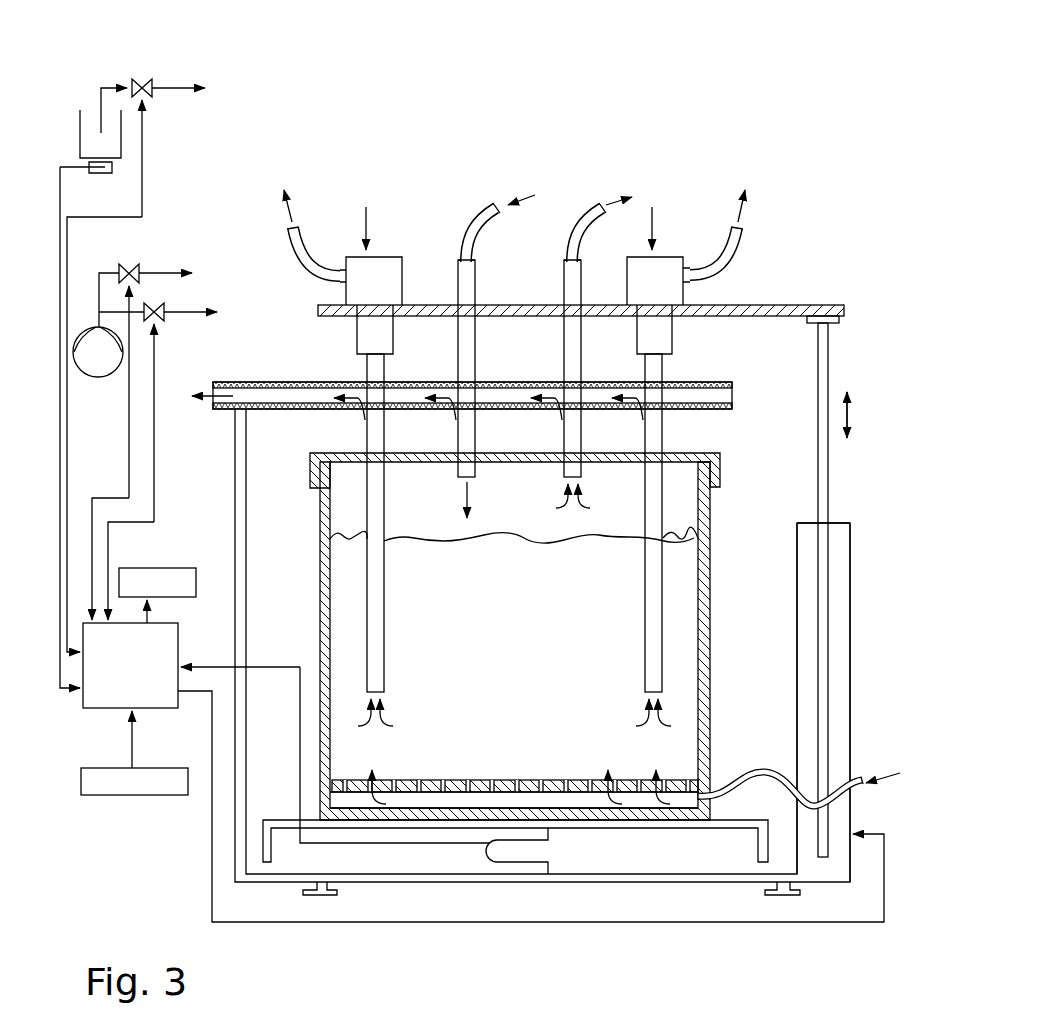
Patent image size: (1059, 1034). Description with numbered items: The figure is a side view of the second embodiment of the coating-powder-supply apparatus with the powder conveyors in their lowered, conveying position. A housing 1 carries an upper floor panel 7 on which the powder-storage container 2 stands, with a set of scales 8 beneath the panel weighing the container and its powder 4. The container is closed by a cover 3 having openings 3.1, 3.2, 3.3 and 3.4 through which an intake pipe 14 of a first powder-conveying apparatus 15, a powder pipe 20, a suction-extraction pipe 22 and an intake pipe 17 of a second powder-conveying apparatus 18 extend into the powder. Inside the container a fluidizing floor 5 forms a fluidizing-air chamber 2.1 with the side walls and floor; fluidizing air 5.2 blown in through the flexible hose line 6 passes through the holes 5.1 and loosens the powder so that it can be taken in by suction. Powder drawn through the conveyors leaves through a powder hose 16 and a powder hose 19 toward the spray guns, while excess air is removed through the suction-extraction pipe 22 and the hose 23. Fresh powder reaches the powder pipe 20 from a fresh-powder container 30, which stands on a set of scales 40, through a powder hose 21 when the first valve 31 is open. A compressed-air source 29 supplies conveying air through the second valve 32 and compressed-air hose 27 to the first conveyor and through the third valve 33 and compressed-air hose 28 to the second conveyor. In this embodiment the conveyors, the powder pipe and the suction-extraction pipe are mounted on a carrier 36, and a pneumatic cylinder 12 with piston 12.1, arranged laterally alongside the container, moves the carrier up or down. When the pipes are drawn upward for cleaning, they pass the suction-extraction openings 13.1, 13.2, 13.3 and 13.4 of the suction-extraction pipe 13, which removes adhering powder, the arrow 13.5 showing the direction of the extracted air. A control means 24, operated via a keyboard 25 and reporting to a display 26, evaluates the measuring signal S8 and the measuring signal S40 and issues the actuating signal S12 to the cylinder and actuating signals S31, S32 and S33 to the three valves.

The housing 1 is at (235, 508).
The powder-storage container 2 is at (320, 605).
The fluidizing-air chamber 2.1 is at (647, 808).
The cover 3 is at (310, 478).
The opening in the cover 3.1 is at (388, 453).
The opening in the cover 3.2 is at (479, 453).
The opening in the cover 3.3 is at (586, 453).
The opening in the cover 3.4 is at (671, 453).
The powder 4 is at (505, 545).
The fluidizing floor 5 is at (640, 779).
The fluidizing-air openings 5.1 is at (493, 780).
The fluidizing air 5.2 is at (737, 776).
The hose line for fluidizing air 6 is at (762, 772).
The upper floor panel 7 is at (283, 820).
The set of scales 8 is at (548, 842).
The pneumatic cylinder 12 is at (851, 640).
The piston 12.1 is at (829, 457).
The suction-extraction pipe 13 is at (226, 378).
The suction-extraction opening 13.1 is at (393, 380).
The suction-extraction opening 13.2 is at (480, 380).
The suction-extraction opening 13.3 is at (575, 380).
The suction-extraction opening 13.4 is at (670, 380).
The flow direction of the suction-extraction air 13.5 is at (196, 410).
The intake pipe 14 is at (384, 512).
The powder-conveying apparatus 15 is at (385, 257).
The powder hose 16 is at (307, 232).
The intake pipe 17 is at (663, 514).
The powder-conveying apparatus 18 is at (683, 257).
The powder hose 19 is at (746, 252).
The powder pipe 20 is at (480, 472).
The powder hose 21 is at (489, 210).
The suction-extraction pipe 22 is at (583, 472).
The suction-extraction hose 23 is at (597, 210).
The control means 24 is at (178, 623).
The keyboard 25 is at (110, 795).
The display 26 is at (180, 568).
The compressed-air hose 27 is at (266, 232).
The compressed-air hose 28 is at (418, 250).
The compressed-air source 29 is at (93, 377).
The fresh-powder container 30 is at (98, 110).
The first valve 31 is at (140, 72).
The second valve 32 is at (138, 262).
The third valve 33 is at (166, 322).
The carrier 36 is at (763, 302).
The set of scales 40 is at (93, 173).
The measuring signal S8 is at (335, 743).
The actuating signal S12 is at (531, 808).
The actuating signal S31 is at (87, 480).
The actuating signal S32 is at (108, 452).
The actuating signal S33 is at (173, 442).
The measuring signal S40 is at (72, 690).